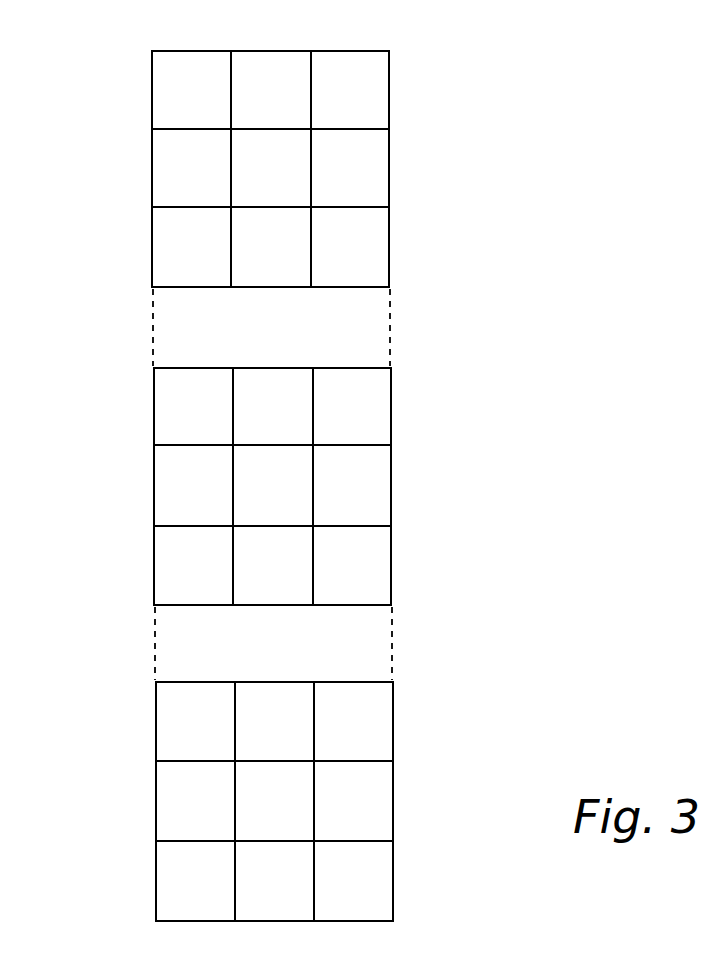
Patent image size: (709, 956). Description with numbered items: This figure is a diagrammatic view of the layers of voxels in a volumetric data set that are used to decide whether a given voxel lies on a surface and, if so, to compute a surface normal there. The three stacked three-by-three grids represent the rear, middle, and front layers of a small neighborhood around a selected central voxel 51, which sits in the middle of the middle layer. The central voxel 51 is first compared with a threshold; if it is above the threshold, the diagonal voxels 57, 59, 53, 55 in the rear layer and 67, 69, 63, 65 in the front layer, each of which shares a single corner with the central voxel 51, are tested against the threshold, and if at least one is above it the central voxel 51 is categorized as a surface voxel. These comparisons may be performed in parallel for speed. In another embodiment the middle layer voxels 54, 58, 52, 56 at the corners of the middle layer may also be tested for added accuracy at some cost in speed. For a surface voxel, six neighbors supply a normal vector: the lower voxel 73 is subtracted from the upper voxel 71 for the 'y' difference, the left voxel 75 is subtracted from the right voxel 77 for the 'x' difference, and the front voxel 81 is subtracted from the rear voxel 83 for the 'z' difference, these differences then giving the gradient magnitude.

The central voxel 51 is at (258, 482).
The middle layer voxel 52 is at (173, 550).
The diagonal voxel 53 is at (176, 233).
The middle layer voxel 54 is at (173, 384).
The diagonal voxel 55 is at (372, 246).
The middle layer voxel 56 is at (373, 562).
The diagonal voxel 57 is at (164, 96).
The middle layer voxel 58 is at (373, 393).
The diagonal voxel 59 is at (372, 78).
The diagonal voxel 63 is at (180, 868).
The diagonal voxel 65 is at (378, 872).
The diagonal voxel 67 is at (180, 699).
The diagonal voxel 69 is at (378, 700).
The upper voxel 71 is at (281, 163).
The lower voxel 73 is at (250, 815).
The left voxel 75 is at (173, 473).
The right voxel 77 is at (373, 485).
The front voxel 81 is at (288, 580).
The rear voxel 83 is at (271, 381).